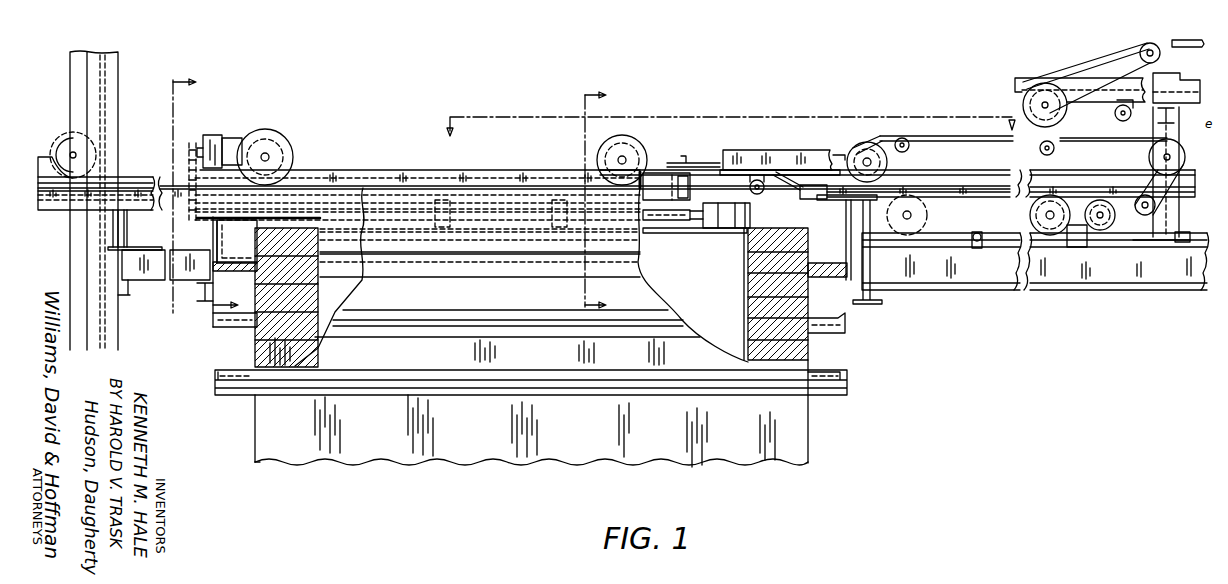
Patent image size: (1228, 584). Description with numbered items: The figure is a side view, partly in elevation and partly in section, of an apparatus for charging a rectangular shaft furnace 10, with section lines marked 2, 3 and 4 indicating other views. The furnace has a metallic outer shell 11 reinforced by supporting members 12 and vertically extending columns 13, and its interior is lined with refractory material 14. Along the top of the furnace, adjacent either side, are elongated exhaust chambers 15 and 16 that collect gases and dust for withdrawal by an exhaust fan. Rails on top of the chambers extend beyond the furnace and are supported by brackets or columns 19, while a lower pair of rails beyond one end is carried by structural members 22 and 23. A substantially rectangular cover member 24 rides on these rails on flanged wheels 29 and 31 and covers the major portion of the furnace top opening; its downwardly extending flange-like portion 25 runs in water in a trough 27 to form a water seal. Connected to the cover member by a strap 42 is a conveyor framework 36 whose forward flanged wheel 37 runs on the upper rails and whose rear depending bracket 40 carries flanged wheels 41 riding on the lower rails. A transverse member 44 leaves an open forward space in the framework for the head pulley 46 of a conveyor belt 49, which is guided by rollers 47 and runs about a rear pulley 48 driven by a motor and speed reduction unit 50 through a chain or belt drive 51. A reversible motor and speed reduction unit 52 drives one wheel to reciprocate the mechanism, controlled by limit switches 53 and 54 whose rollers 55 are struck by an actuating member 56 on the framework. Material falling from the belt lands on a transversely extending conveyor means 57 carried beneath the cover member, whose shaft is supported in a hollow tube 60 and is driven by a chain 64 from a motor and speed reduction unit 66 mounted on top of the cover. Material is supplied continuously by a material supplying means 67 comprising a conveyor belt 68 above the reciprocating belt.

The section line 2- 2 is at (730, 141).
The section line 3- 3 is at (604, 201).
The section line 4- 4 is at (191, 201).
The furnace 10 is at (826, 459).
The metallic outer shell 11 is at (805, 434).
The supporting members 12 is at (846, 324).
The columns 13 is at (112, 68).
The refractory material 14 is at (748, 310).
The elongated chamber 15 is at (537, 247).
The elongated chamber 16 is at (245, 239).
The brackets or columns 19 is at (205, 232).
The structural member 22 is at (958, 296).
The structural member 23 is at (862, 295).
The cover member 24 is at (389, 161).
The flange-like portion 25 is at (560, 171).
The trough 27 is at (495, 176).
The flanged wheel 29 is at (643, 156).
The flanged wheel 31 is at (283, 150).
The framework 36 is at (1006, 178).
The flanged wheel 37 is at (867, 143).
The depending bracket 40 is at (1028, 208).
The flanged wheel 41 is at (1025, 223).
The strap 42 is at (708, 163).
The transverse member 44 is at (748, 145).
The head pulley 46 is at (760, 190).
The rollers or guides 47 is at (910, 147).
The rear pulley or drum 48 is at (1150, 156).
The conveyor belt 49 is at (948, 134).
The electric motor and speed reduction unit 50 is at (1173, 225).
The chain or belt drive 51 is at (1148, 165).
The motor and speed reduction unit 52 is at (1083, 250).
The limit switch 53 is at (1116, 252).
The limit switch 54 is at (992, 254).
The roller 55 is at (1132, 256).
The actuating member 56 is at (1198, 252).
The transversely extending conveyor means 57 is at (732, 235).
The hollow tube or pipe 60 is at (251, 197).
The chain 64 is at (186, 158).
The motor and speed reduction unit 66 is at (240, 136).
The material supplying means 67 is at (1061, 78).
The conveyor belt 68 is at (1129, 50).